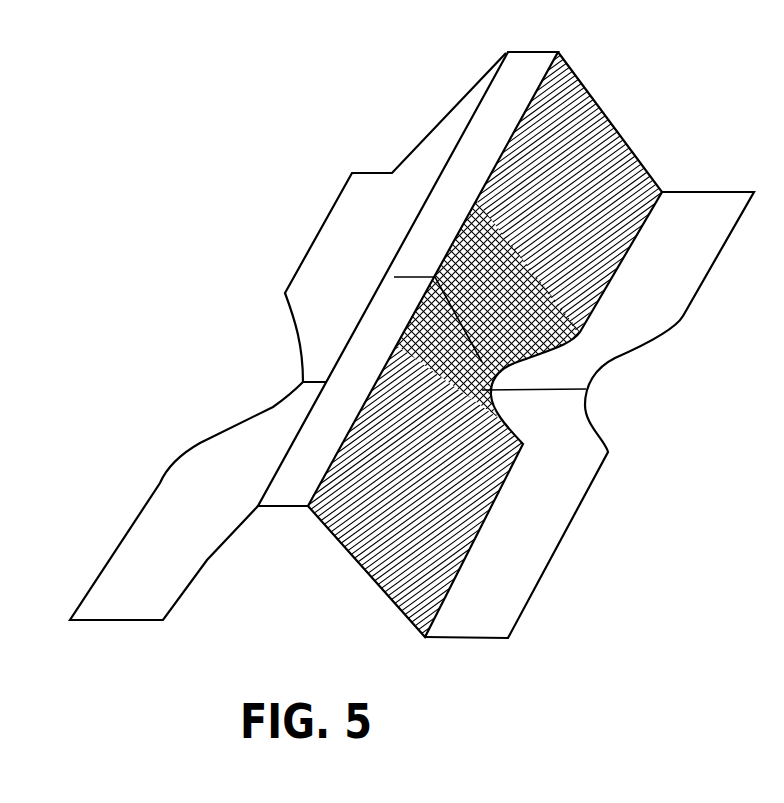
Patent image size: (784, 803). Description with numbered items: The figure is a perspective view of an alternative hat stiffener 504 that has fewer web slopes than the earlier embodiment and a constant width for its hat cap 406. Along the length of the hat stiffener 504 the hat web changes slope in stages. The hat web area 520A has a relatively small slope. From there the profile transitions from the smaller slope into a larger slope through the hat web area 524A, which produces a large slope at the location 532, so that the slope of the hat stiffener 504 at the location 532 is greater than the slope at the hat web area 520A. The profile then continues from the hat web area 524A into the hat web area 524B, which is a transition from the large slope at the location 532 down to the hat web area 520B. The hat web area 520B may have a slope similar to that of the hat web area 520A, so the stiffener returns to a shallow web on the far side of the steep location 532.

The hat stiffener 504 is at (175, 204).
The hat cap 406 is at (524, 72).
The hat web area 520A is at (598, 148).
The hat web area 520B is at (430, 557).
The hat web area 524A is at (533, 324).
The hat web area 524B is at (497, 395).
The location 532 is at (376, 277).